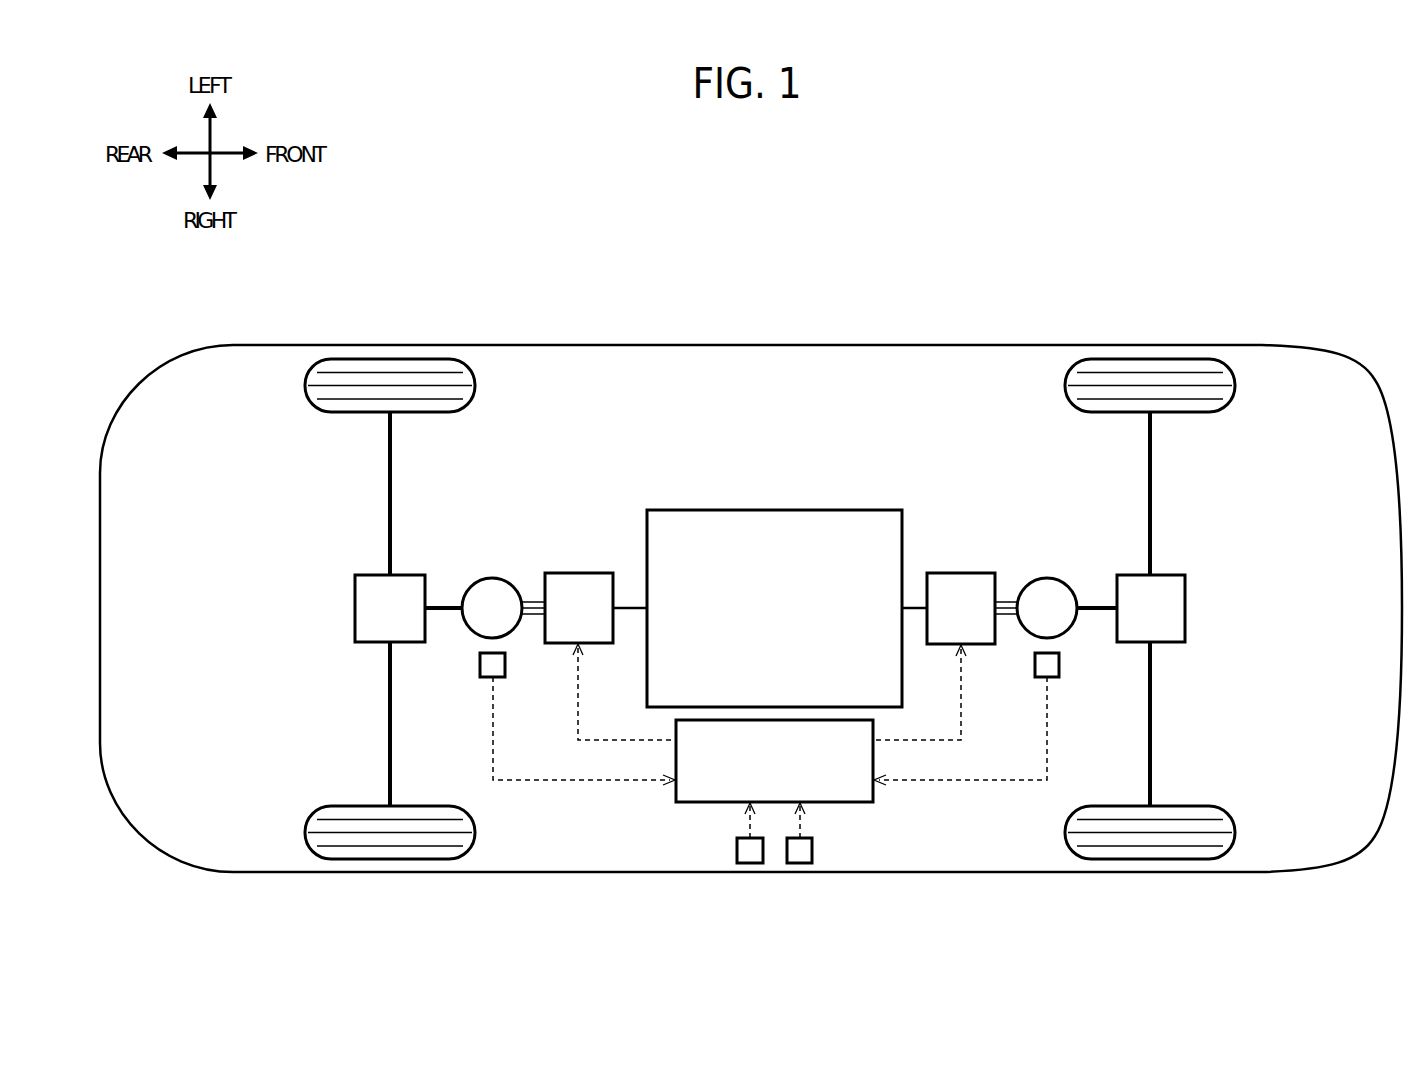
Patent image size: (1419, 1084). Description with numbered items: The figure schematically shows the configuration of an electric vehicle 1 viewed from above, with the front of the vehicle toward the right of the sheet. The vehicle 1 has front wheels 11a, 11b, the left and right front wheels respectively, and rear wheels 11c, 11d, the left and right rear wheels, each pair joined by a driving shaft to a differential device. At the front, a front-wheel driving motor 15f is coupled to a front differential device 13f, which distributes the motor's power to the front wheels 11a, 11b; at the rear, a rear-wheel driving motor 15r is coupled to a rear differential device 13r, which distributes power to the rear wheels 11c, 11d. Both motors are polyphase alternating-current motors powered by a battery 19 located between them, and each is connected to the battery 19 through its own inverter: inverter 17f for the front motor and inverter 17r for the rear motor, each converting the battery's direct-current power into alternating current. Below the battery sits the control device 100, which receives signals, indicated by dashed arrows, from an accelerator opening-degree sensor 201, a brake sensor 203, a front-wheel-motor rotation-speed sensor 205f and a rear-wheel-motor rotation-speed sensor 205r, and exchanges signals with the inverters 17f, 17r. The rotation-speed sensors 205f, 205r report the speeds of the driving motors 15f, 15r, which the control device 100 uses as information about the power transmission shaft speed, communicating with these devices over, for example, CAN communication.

The vehicle 1 is at (1187, 137).
The front wheel 11a is at (1173, 360).
The front wheel 11b is at (1177, 858).
The rear wheel 11c is at (358, 360).
The rear wheel 11d is at (360, 858).
The rear differential device 13r is at (413, 583).
The rear-wheel driving motor 15r is at (495, 587).
The inverter 17r is at (580, 583).
The front differential device 13f is at (1130, 583).
The front-wheel driving motor 15f is at (1040, 587).
The inverter 17f is at (958, 583).
The battery 19 is at (744, 570).
The control device 100 is at (842, 780).
The accelerator opening-degree sensor 201 is at (750, 863).
The brake sensor 203 is at (797, 863).
The rear-wheel-motor rotation-speed sensor 205r is at (503, 677).
The front-wheel-motor rotation-speed sensor 205f is at (1043, 668).